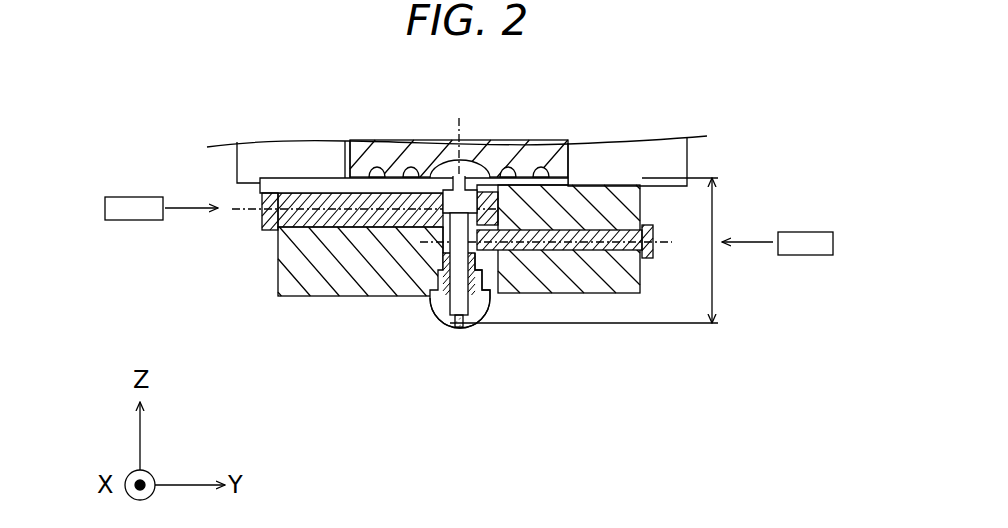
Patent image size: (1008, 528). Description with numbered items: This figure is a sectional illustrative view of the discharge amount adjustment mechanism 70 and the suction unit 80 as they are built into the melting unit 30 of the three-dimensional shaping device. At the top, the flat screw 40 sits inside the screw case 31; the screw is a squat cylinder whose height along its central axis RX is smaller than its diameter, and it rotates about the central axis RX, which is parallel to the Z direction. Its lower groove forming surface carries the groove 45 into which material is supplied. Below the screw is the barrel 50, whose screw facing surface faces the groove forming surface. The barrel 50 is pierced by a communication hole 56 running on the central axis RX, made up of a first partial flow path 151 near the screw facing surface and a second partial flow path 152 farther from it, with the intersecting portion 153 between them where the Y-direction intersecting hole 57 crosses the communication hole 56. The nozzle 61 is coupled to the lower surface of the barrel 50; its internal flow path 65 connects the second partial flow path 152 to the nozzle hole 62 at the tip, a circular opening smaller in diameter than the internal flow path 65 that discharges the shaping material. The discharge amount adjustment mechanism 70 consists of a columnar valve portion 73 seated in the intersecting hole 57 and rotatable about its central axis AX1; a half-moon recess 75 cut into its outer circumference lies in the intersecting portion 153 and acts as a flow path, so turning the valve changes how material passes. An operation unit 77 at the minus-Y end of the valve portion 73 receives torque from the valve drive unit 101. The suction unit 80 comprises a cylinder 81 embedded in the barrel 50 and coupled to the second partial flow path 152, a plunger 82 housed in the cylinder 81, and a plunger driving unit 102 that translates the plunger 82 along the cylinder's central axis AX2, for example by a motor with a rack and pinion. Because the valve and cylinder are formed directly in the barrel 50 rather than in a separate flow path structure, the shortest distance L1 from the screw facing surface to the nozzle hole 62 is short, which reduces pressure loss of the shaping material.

The melting unit 30 is at (524, 129).
The screw case 31 is at (685, 160).
The flat screw 40 is at (410, 140).
The groove 45 is at (405, 170).
The barrel 50 is at (330, 295).
The communication hole 56 is at (491, 218).
The intersecting hole 57 is at (372, 222).
The nozzle 61 is at (483, 325).
The nozzle hole 62 is at (457, 325).
The internal flow path 65 is at (503, 290).
The discharge amount adjustment mechanism 70 is at (320, 172).
The valve portion 73 is at (327, 183).
The recess 75 is at (470, 160).
The operation unit 77 is at (263, 203).
The suction unit 80 is at (617, 268).
The cylinder 81 is at (620, 230).
The plunger 82 is at (553, 253).
The valve drive unit 101 is at (138, 197).
The plunger driving unit 102 is at (792, 232).
The first partial flow path 151 is at (545, 155).
The second partial flow path 152 is at (445, 240).
The intersecting portion 153 is at (450, 155).
The central axis RX is at (459, 118).
The central axis of the valve portion AX1 is at (250, 212).
The central axis of the cylinder AX2 is at (666, 245).
The shortest distance L1 is at (600, 250).